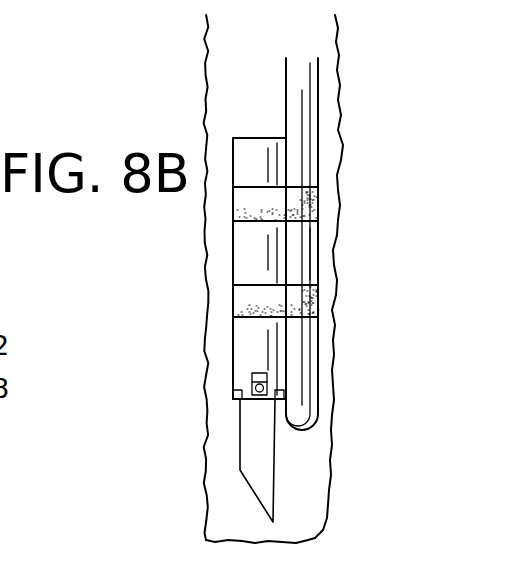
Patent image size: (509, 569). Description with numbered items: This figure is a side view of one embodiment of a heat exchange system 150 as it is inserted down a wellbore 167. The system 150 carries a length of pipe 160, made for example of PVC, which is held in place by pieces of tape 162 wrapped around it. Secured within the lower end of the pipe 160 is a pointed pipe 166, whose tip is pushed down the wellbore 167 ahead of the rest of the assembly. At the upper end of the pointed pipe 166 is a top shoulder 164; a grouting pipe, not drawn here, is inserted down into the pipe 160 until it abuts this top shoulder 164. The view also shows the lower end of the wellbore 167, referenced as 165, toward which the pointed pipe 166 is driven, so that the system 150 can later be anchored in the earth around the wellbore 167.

The system 150 is at (310, 93).
The pipe 160 is at (252, 260).
The pieces of tape 162 is at (305, 208).
The top shoulder 164 is at (235, 389).
The borehole bottom 165 is at (283, 542).
The pointed pipe 166 is at (275, 468).
The wellbore 167 is at (337, 45).